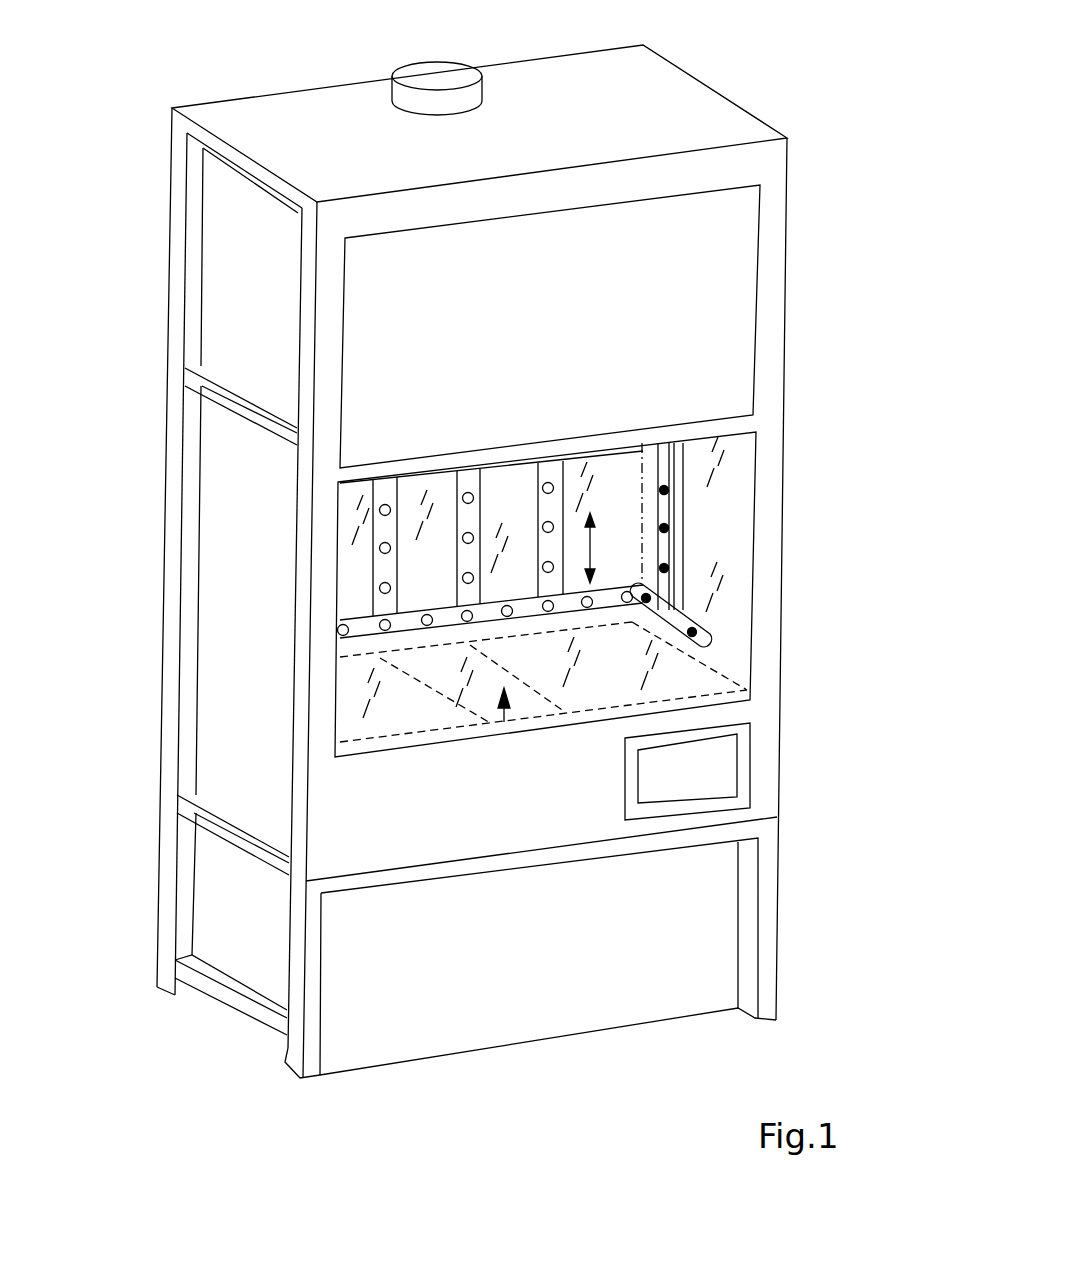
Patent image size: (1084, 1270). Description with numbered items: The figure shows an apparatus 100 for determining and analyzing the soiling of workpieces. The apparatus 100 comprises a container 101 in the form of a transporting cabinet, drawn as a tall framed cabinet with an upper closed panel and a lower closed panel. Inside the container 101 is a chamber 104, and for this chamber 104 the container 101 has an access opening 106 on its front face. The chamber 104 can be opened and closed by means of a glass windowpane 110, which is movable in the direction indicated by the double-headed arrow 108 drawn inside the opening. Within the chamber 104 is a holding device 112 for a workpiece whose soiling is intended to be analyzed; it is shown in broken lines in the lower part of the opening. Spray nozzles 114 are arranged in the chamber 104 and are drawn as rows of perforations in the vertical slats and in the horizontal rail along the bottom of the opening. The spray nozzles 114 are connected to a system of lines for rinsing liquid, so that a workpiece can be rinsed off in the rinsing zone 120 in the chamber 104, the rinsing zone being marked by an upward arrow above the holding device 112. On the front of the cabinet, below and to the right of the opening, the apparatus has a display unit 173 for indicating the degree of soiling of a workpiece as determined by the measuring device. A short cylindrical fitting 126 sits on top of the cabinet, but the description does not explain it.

The apparatus 100 is at (733, 89).
The container 101 is at (170, 253).
The chamber 104 is at (645, 612).
The access opening 106 is at (751, 653).
The double-headed arrow 108 is at (595, 545).
The glass windowpane 110 is at (585, 497).
The holding device 112 is at (440, 690).
The spray nozzles 114 is at (385, 548).
The rinsing zone 120 is at (505, 722).
The connection port 126 is at (430, 68).
The display unit 173 is at (735, 772).